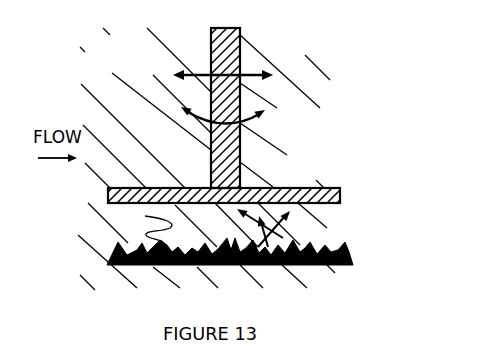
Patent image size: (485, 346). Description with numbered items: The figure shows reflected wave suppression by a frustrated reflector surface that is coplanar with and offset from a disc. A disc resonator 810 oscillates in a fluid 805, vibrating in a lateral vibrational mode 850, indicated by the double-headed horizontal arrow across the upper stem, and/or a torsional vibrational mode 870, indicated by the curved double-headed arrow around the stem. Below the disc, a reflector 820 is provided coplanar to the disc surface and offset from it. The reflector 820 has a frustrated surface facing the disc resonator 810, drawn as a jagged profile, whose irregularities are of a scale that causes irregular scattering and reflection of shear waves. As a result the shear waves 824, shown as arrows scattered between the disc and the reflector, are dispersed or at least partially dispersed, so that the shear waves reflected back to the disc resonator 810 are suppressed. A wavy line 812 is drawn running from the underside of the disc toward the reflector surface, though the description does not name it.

The fluid 805 is at (130, 64).
The disc resonator 810 is at (252, 186).
The flow path line 812 is at (145, 216).
The reflector 820 is at (353, 266).
The shear waves 824 is at (292, 227).
The lateral vibrational mode 850 is at (257, 72).
The torsional vibrational mode 870 is at (240, 117).